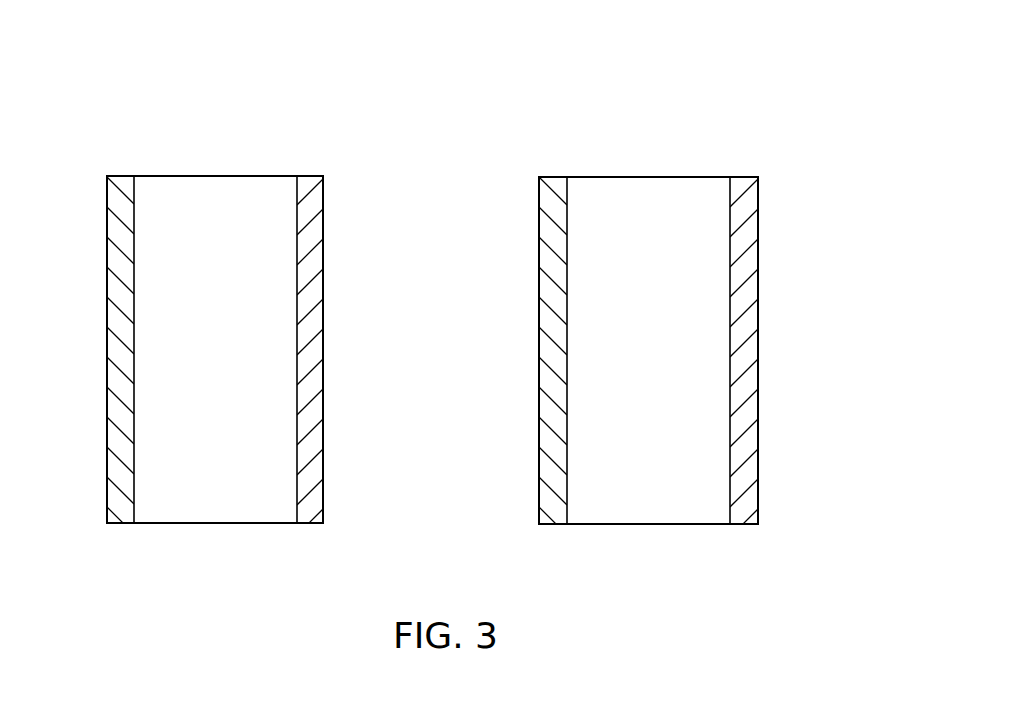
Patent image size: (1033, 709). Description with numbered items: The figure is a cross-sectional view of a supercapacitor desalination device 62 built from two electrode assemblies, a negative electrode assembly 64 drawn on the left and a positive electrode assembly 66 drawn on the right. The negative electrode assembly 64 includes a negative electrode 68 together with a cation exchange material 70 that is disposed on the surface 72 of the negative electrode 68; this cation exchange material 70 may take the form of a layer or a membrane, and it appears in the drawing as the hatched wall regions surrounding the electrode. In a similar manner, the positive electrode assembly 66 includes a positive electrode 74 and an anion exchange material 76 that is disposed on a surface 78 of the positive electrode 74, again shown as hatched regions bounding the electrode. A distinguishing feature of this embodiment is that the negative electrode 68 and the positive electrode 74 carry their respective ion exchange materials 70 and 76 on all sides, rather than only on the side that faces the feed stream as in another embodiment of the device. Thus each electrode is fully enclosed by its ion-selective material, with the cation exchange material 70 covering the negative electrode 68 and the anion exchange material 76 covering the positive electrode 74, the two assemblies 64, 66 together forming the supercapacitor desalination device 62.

The supercapacitor desalination device 62 is at (708, 72).
The negative electrode assembly 64 is at (138, 163).
The positive electrode assembly 66 is at (724, 166).
The negative electrode 68 is at (216, 517).
The cation exchange material 70 is at (113, 437).
The surface of the negative electrode 72 is at (229, 372).
The positive electrode 74 is at (653, 517).
The anion exchange material 76 is at (547, 439).
The surface of the positive electrode 78 is at (662, 373).